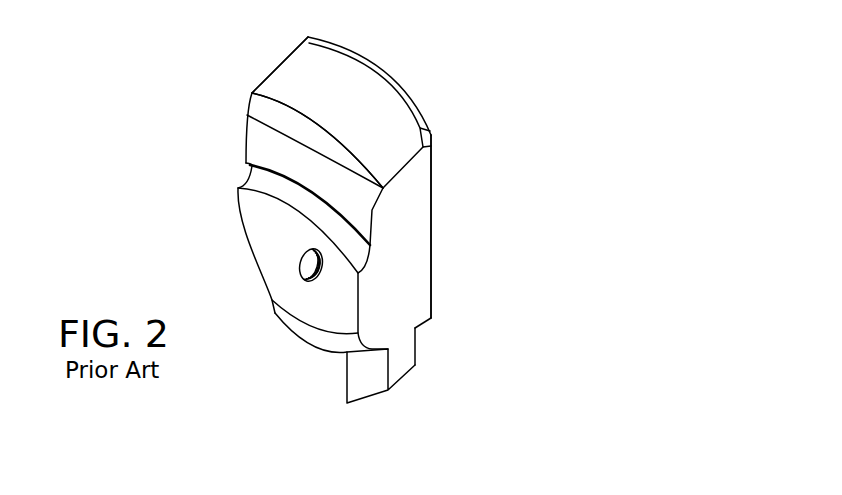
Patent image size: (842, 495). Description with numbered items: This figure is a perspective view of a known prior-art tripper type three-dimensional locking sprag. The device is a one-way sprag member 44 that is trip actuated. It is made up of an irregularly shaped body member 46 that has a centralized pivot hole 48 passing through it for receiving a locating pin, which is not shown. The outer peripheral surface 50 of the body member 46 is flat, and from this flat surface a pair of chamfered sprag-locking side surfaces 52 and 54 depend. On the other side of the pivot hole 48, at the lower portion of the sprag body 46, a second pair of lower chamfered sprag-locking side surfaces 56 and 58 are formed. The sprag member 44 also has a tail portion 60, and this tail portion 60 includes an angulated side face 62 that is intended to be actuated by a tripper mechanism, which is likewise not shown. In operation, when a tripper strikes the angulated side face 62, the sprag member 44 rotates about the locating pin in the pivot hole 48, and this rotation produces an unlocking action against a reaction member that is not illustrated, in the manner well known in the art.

The sprag member 44 is at (394, 44).
The body member 46 is at (416, 221).
The pivot hole 48 is at (298, 266).
The outer peripheral surface 50 is at (280, 76).
The chamfered sprag-locking side surface 52 is at (252, 107).
The chamfered sprag-locking side surface 54 is at (421, 126).
The lower chamfered sprag-locking side surface 56 is at (287, 327).
The lower chamfered sprag-locking side surface 58 is at (418, 327).
The tail portion 60 is at (398, 363).
The angulated side face 62 is at (415, 348).